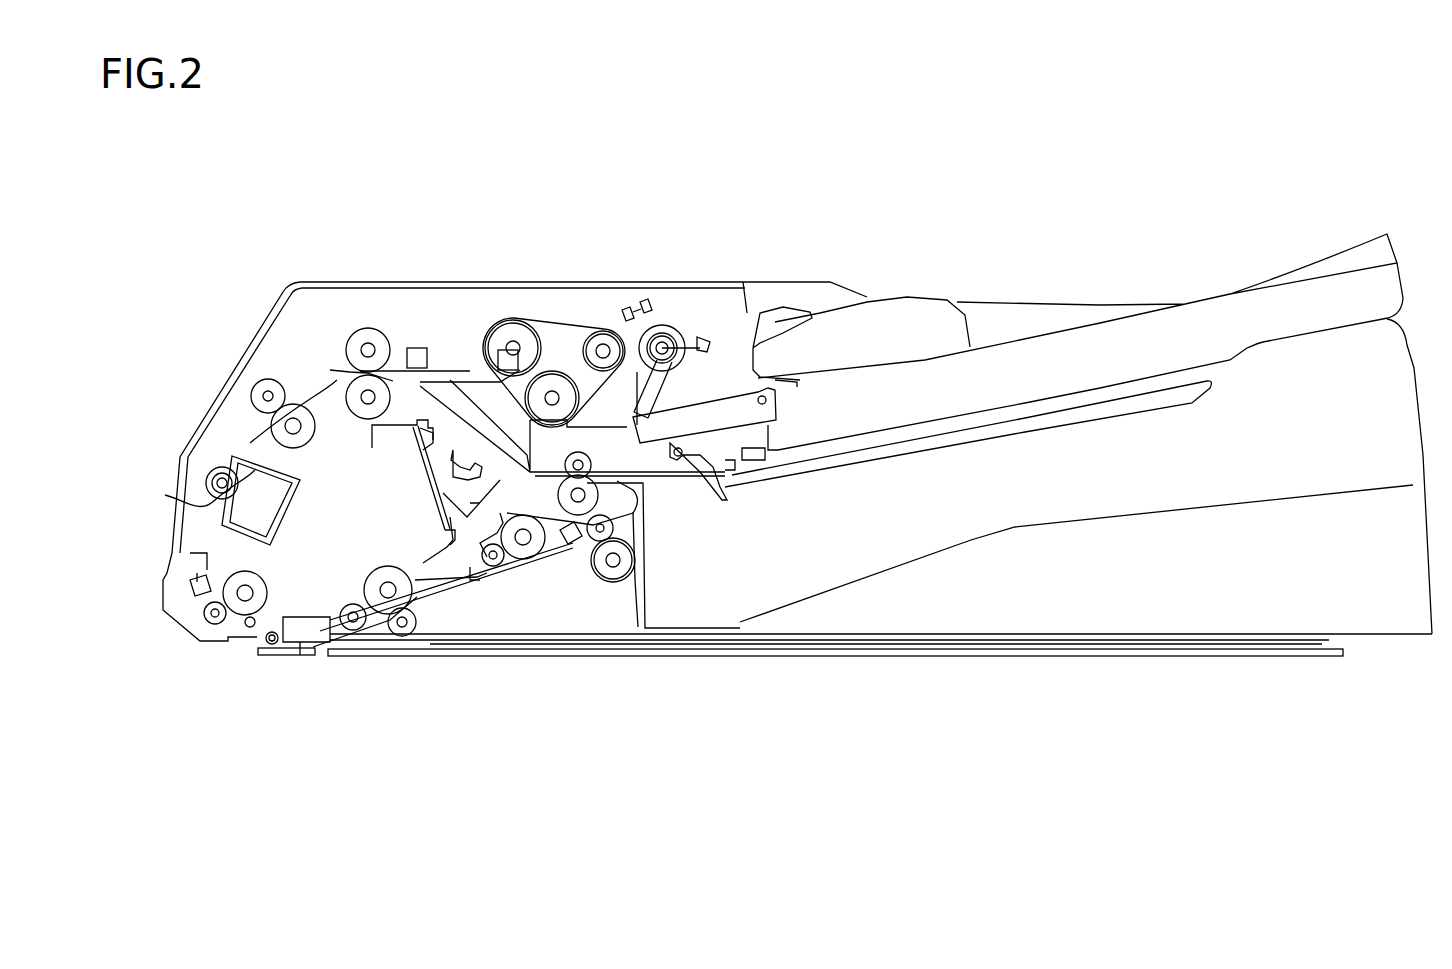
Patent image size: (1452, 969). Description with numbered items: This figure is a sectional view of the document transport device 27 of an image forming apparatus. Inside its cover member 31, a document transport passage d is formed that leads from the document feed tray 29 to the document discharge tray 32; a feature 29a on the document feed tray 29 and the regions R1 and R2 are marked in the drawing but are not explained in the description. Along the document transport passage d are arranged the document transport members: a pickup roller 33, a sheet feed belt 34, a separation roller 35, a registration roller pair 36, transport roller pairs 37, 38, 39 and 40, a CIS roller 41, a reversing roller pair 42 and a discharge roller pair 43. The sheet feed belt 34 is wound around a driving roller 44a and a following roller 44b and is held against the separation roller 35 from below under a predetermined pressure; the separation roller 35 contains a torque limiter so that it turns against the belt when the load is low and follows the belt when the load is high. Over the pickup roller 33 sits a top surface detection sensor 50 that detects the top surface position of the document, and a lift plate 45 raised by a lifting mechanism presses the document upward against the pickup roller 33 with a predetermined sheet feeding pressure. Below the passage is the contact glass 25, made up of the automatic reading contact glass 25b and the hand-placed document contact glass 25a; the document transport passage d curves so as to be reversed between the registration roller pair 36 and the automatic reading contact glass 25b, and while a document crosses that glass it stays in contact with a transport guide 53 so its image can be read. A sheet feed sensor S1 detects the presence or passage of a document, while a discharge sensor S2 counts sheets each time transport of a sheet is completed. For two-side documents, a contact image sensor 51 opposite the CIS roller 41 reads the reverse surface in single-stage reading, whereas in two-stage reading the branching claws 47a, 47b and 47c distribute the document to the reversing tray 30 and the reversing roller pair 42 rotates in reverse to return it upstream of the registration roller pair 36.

The contact glass 25 is at (410, 758).
The hand-placed document contact glass 25a is at (450, 658).
The automatic reading contact glass 25b is at (275, 665).
The document transport device 27 is at (474, 190).
The document feed tray 29 is at (1200, 300).
The cover protrusion 29a is at (930, 305).
The reversing tray 30 is at (1125, 414).
The cover member 31 is at (288, 290).
The document discharge tray 32 is at (1002, 527).
The pickup roller 33 is at (667, 350).
The sheet feed belt 34 is at (548, 323).
The separation roller 35 is at (555, 395).
The registration roller pair 36 is at (368, 348).
The transport roller pair 37 is at (268, 394).
The transport roller pair 38 is at (212, 628).
The transport roller pair 39 is at (368, 592).
The transport roller pair 40 is at (535, 560).
The CIS roller 41 is at (215, 468).
The reversing roller pair 42 is at (602, 500).
The discharge roller pair 43 is at (613, 584).
The driving roller 44a is at (505, 345).
The following roller 44b is at (603, 348).
The lift plate 45 is at (720, 400).
The branching claw 47a is at (450, 573).
The branching claw 47b is at (492, 570).
The branching claw 47c is at (480, 487).
The top surface detection sensor 50 is at (650, 310).
The contact image sensor 51 is at (190, 490).
The transport guide 53 is at (300, 628).
The sheet feed sensor S1 is at (417, 352).
The discharge sensor S2 is at (568, 568).
The region R1 is at (305, 657).
The region R2 is at (857, 657).
The document transport passage d is at (325, 388).